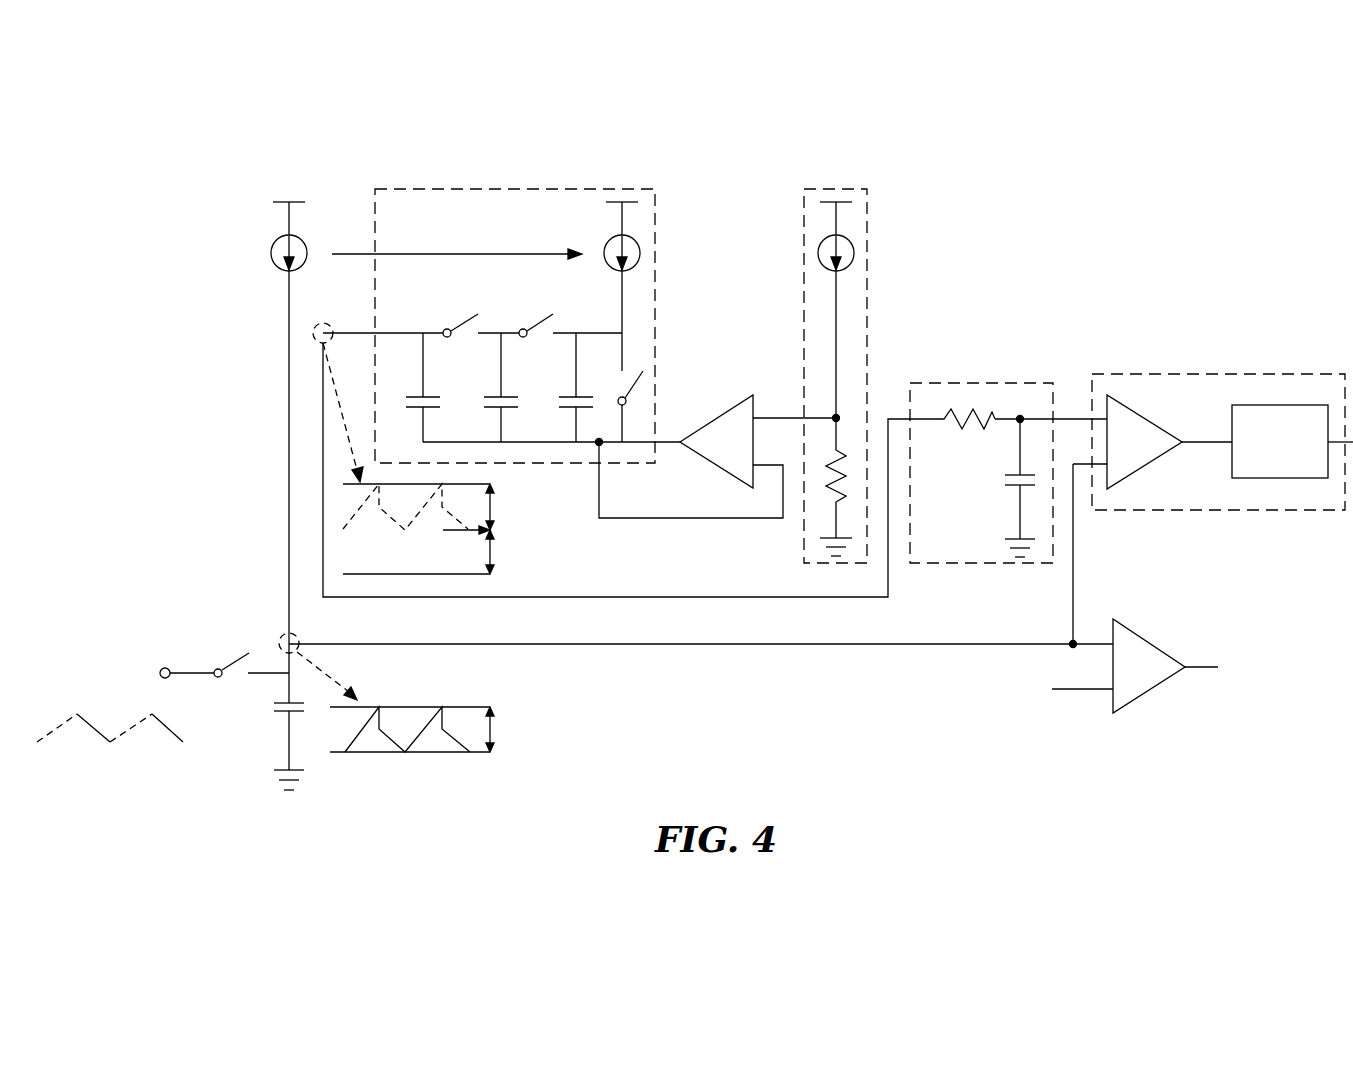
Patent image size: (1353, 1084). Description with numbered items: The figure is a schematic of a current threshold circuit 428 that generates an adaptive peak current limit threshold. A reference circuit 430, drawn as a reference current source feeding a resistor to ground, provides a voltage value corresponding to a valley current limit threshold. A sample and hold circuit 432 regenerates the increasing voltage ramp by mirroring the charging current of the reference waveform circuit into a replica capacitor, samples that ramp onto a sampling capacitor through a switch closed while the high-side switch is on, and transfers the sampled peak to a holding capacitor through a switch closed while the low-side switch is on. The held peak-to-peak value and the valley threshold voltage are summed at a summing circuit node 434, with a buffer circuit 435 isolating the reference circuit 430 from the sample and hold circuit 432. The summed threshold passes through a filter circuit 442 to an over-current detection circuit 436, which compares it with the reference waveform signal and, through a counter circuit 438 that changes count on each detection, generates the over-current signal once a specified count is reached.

The current threshold circuit 428 is at (1209, 181).
The reference circuit 430 is at (841, 189).
The sample and hold circuit 432 is at (519, 189).
The summing circuit node 434 is at (602, 446).
The buffer circuit 435 is at (713, 417).
The over-current detection circuit 436 is at (1228, 374).
The counter circuit 438 is at (1279, 405).
The filter circuit 442 is at (1011, 383).